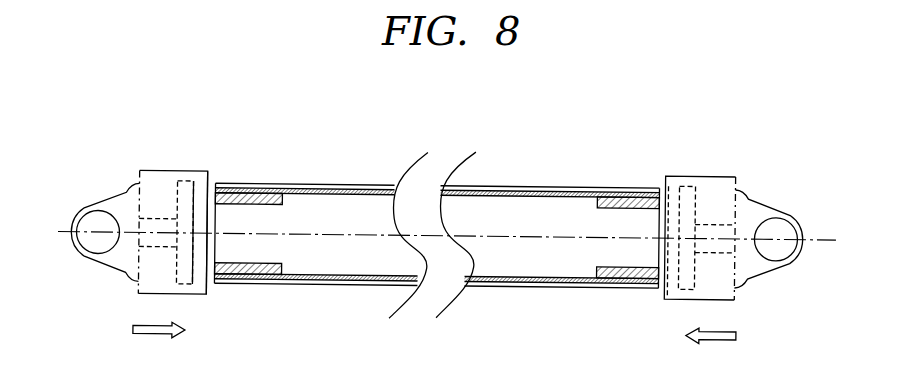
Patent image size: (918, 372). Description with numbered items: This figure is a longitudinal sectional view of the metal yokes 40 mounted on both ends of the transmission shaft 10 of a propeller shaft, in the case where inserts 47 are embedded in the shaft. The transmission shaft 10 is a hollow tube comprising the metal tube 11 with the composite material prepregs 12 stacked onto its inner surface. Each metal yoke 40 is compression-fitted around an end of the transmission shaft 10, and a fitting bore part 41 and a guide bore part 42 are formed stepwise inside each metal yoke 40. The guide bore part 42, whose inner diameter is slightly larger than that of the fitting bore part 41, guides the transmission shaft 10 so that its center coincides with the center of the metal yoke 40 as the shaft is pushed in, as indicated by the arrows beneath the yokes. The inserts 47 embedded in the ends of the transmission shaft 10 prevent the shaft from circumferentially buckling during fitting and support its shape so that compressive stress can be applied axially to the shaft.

The transmission shaft 10 is at (437, 206).
The metal tube 11 is at (590, 185).
The composite material prepregs 12 is at (368, 186).
The metal yoke 40 is at (158, 157).
The fitting bore part 41 is at (182, 179).
The guide bore part 42 is at (205, 168).
The insert 47 is at (643, 191).